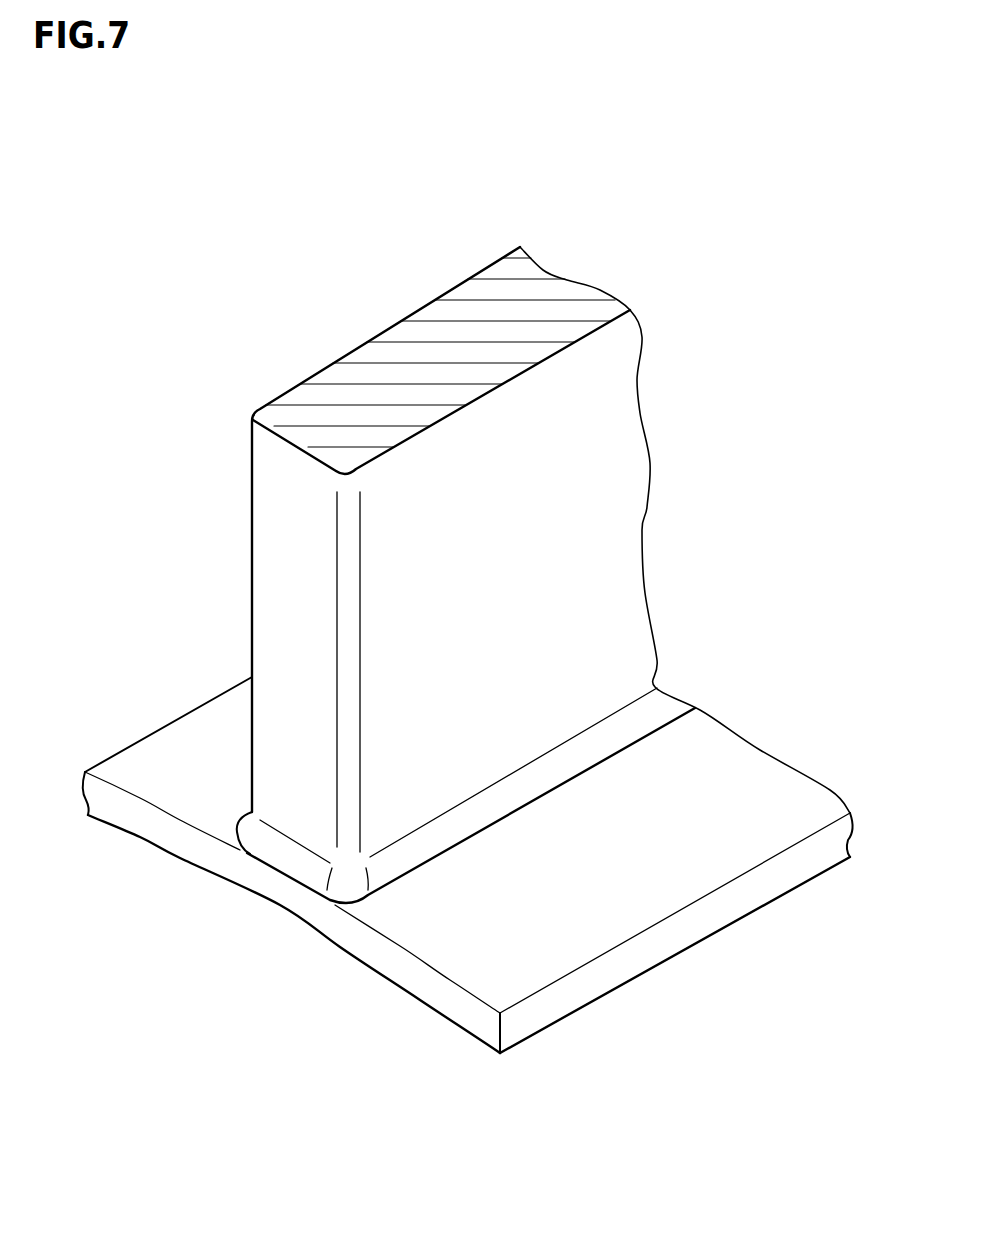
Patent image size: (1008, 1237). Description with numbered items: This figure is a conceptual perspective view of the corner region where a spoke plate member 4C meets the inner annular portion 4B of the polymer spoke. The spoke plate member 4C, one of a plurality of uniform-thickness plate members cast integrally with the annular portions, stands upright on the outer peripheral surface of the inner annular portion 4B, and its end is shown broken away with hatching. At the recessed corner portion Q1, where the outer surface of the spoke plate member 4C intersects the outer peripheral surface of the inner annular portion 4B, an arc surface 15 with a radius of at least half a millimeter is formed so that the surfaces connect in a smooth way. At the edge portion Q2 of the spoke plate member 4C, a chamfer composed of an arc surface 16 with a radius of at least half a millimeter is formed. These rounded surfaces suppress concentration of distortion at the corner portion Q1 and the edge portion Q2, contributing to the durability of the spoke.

The inner annular portion 4B is at (168, 758).
The spoke plate member 4C is at (413, 363).
The arc surface 15 is at (272, 847).
The arc surface 16 is at (257, 413).
The recessed corner portion Q1 is at (303, 865).
The edge portion Q2 is at (243, 418).